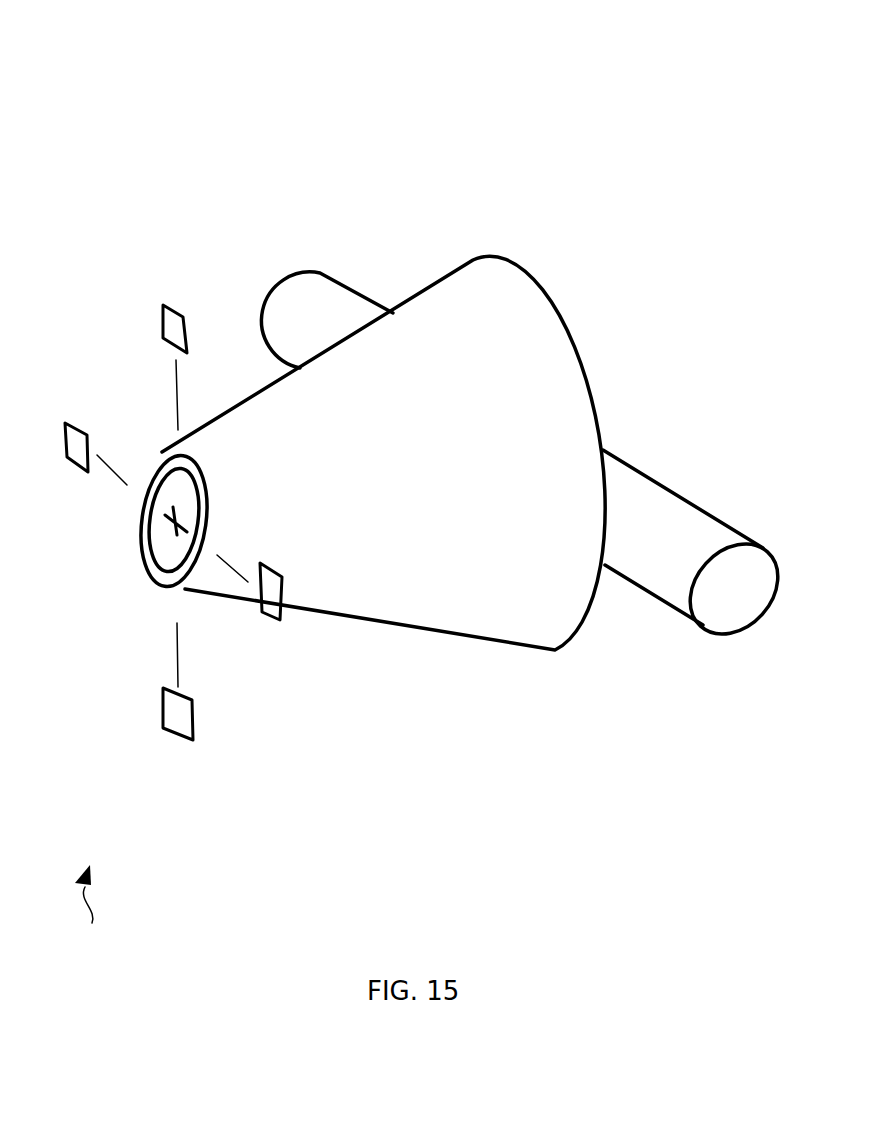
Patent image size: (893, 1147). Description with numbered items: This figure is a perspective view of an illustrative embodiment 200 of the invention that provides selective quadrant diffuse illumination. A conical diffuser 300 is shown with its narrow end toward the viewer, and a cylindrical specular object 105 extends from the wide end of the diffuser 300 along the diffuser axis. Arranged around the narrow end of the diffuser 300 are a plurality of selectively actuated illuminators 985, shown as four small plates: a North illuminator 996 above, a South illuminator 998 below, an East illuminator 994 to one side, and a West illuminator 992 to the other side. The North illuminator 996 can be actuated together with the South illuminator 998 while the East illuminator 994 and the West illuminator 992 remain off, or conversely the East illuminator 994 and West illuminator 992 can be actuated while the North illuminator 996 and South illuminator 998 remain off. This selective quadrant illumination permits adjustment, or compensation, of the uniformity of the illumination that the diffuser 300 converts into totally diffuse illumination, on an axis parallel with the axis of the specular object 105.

The detector system 200 is at (256, 97).
The diffuser 300 is at (562, 311).
The specular object 105 is at (658, 477).
The North illuminator 996 is at (161, 322).
The East illuminator 994 is at (72, 473).
The West illuminator 992 is at (278, 622).
The South illuminator 998 is at (164, 742).
The selectively actuated illuminators 985 is at (88, 909).